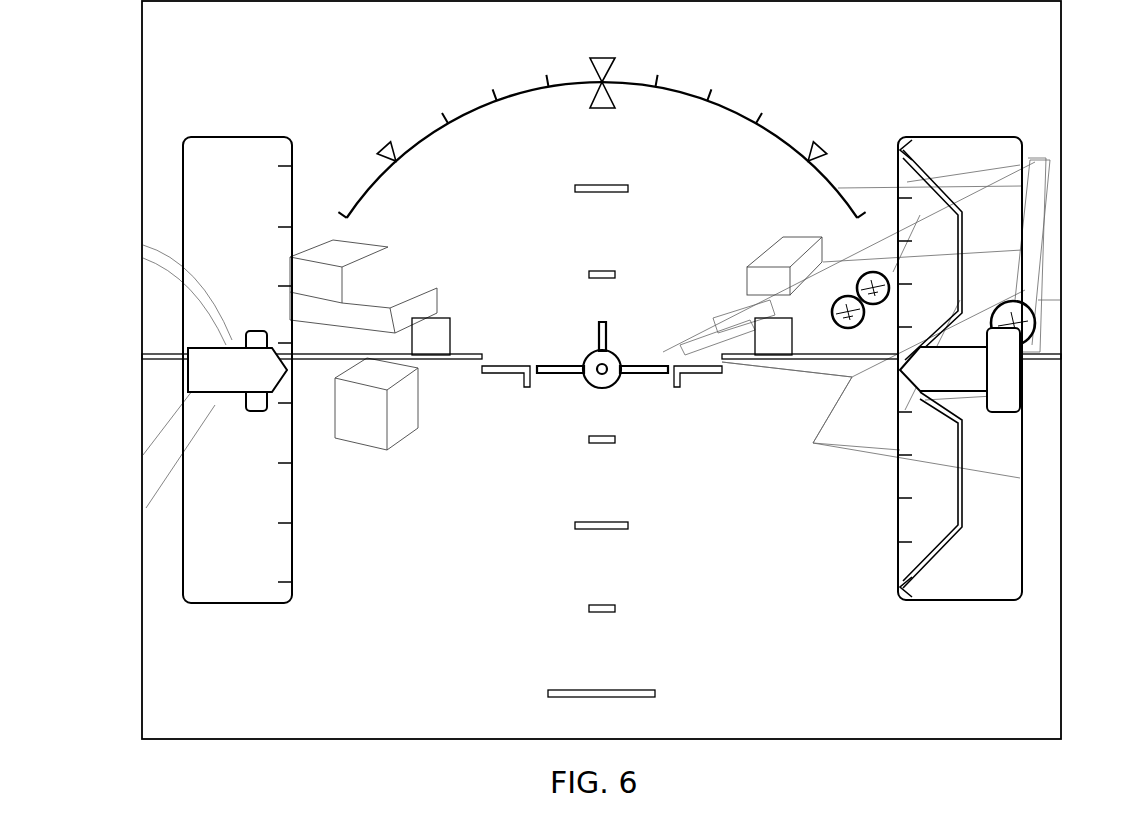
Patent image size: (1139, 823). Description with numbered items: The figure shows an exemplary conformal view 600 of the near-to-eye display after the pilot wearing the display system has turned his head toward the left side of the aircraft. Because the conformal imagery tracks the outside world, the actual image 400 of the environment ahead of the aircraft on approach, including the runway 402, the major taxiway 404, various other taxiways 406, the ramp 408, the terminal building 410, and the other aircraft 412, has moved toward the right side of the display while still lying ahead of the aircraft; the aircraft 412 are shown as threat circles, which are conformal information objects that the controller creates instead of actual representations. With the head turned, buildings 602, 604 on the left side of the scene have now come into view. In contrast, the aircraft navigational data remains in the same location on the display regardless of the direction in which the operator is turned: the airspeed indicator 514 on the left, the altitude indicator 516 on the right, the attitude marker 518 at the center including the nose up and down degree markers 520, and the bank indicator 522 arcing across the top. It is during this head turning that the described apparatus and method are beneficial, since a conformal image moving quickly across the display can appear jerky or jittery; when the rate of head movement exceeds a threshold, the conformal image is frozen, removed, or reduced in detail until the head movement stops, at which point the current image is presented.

The conformal view 600 is at (142, 118).
The actual image 400 is at (858, 152).
The runway 402 is at (1038, 200).
The major taxiway 404 is at (845, 412).
The other taxiways 406 is at (870, 446).
The ramp 408 is at (815, 343).
The terminal building 410 is at (765, 265).
The aircraft 412 is at (876, 271).
The airspeed indicator 514 is at (240, 137).
The altitude indicator 516 is at (958, 137).
The attitude marker 518 is at (590, 388).
The nose up and down degree markers 520 is at (605, 521).
The bank indicator 522 is at (487, 107).
The building 602 is at (403, 434).
The building 604 is at (405, 288).